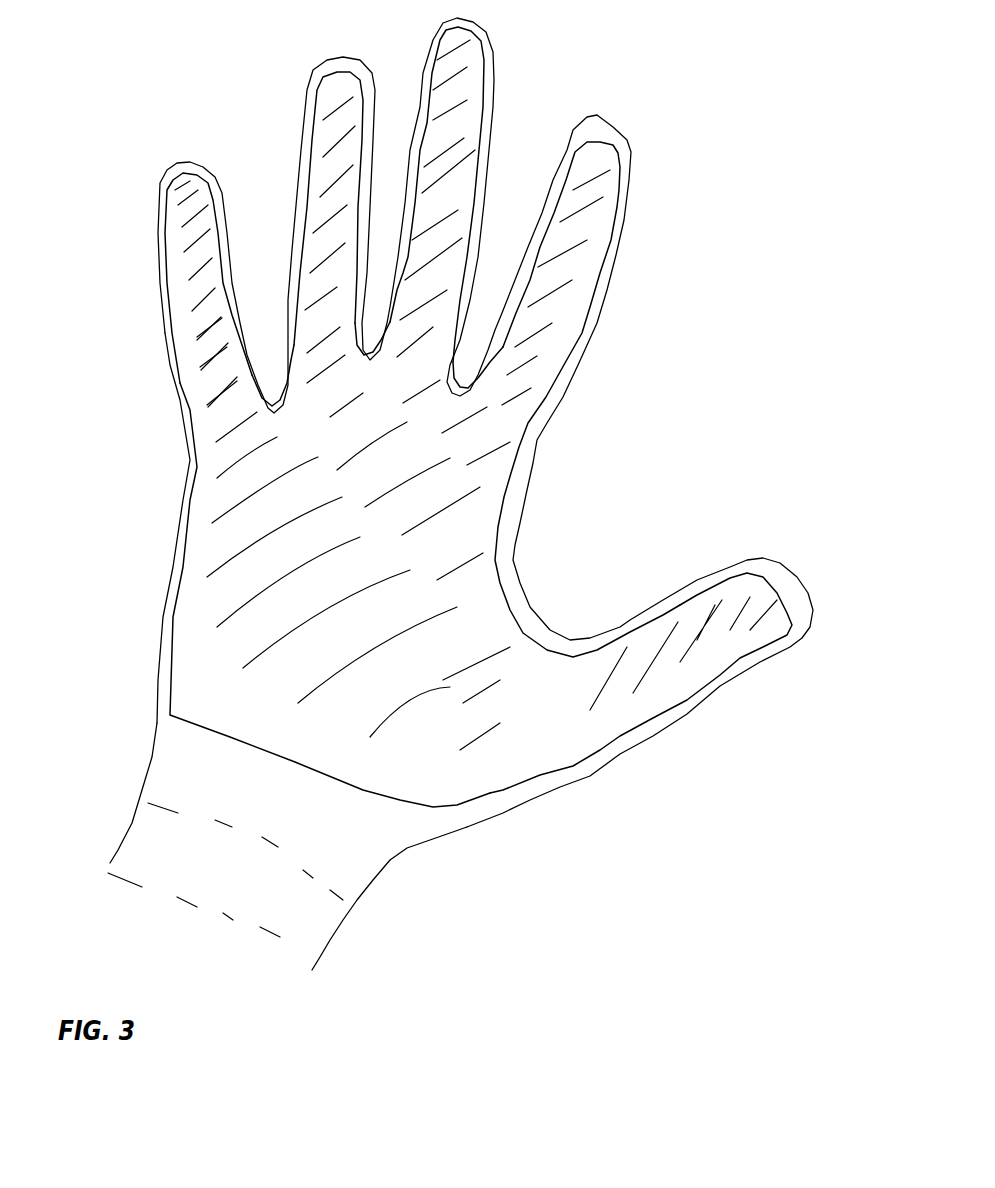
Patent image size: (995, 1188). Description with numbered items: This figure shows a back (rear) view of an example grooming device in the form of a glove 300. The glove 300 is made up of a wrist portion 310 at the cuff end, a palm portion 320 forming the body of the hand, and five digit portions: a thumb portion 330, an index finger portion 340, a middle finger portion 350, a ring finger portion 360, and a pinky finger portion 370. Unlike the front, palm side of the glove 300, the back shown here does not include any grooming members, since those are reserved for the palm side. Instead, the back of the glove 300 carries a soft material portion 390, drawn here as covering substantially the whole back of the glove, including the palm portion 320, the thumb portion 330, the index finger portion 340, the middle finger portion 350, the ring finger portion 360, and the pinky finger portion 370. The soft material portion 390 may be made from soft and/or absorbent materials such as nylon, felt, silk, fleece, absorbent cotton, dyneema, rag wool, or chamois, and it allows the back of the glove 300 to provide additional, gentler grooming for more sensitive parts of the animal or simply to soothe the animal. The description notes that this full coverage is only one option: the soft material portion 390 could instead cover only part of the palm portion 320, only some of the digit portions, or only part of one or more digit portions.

The glove 300 is at (487, 833).
The wrist portion 310 is at (317, 913).
The palm portion 320 is at (210, 622).
The thumb portion 330 is at (798, 578).
The index finger portion 340 is at (630, 158).
The middle finger portion 350 is at (490, 37).
The ring finger portion 360 is at (307, 90).
The pinky finger portion 370 is at (163, 182).
The soft material portion 390 is at (448, 478).